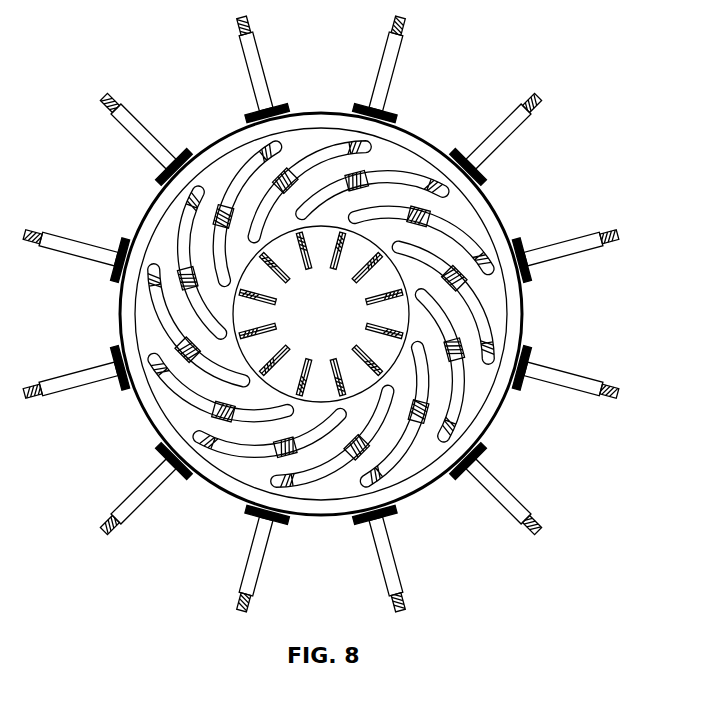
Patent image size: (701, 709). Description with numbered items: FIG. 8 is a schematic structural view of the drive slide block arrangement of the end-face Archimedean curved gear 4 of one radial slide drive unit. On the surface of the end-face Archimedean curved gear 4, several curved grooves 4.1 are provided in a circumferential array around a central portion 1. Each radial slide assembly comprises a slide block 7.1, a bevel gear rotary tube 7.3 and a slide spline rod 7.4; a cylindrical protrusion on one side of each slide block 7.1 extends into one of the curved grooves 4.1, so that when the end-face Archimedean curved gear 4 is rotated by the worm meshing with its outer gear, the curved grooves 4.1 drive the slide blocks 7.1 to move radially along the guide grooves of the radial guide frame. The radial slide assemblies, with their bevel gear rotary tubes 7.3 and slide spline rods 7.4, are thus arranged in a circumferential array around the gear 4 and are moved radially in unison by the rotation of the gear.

The hub 1 is at (333, 243).
The end-face Archimedean curved gear 4 is at (508, 240).
The curved groove 4.1 is at (465, 400).
The slide block 7.1 is at (360, 450).
The bevel gear rotary tube 7.3 is at (468, 148).
The slide spline rod 7.4 is at (535, 93).